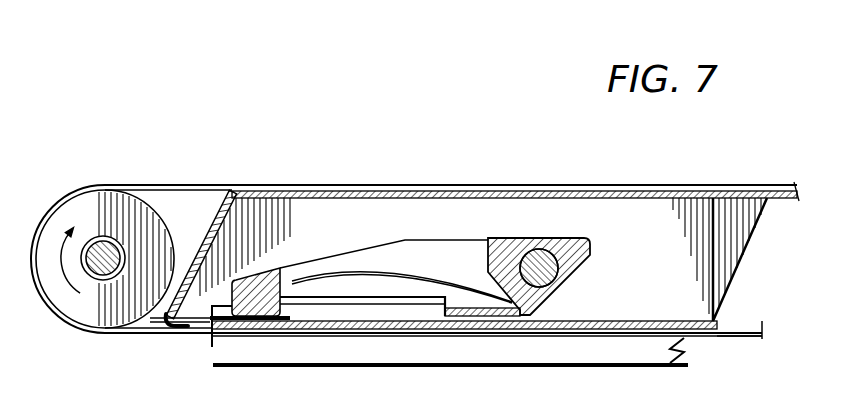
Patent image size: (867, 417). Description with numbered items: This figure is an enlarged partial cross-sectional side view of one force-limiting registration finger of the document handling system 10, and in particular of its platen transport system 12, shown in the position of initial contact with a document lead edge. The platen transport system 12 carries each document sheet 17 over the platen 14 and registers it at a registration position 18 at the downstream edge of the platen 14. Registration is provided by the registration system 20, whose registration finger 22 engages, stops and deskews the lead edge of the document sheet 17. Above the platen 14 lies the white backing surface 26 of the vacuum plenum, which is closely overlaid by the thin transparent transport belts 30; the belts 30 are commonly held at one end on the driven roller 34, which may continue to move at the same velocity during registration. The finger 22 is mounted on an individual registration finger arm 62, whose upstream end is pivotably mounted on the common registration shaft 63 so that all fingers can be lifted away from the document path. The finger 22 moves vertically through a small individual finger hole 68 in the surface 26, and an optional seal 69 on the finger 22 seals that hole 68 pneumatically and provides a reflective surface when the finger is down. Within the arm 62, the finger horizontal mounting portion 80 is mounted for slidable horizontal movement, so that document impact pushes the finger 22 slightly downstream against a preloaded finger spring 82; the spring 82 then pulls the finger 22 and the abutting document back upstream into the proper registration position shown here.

The document handling system 10 is at (212, 157).
The platen transport system 12 is at (342, 173).
The platen 14 is at (440, 345).
The document sheet 17 is at (300, 335).
The registration position 18 is at (215, 345).
The registration system 20 is at (316, 233).
The registration finger 22 is at (216, 304).
The backing surface 26 is at (708, 337).
The transport belt 30 is at (748, 325).
The driven roller 34 is at (115, 213).
The registration finger arm 62 is at (260, 320).
The registration shaft 63 is at (583, 270).
The finger hole 68 is at (187, 332).
The seal 69 is at (197, 323).
The finger horizontal mounting portion 80 is at (365, 305).
The finger spring 82 is at (410, 272).